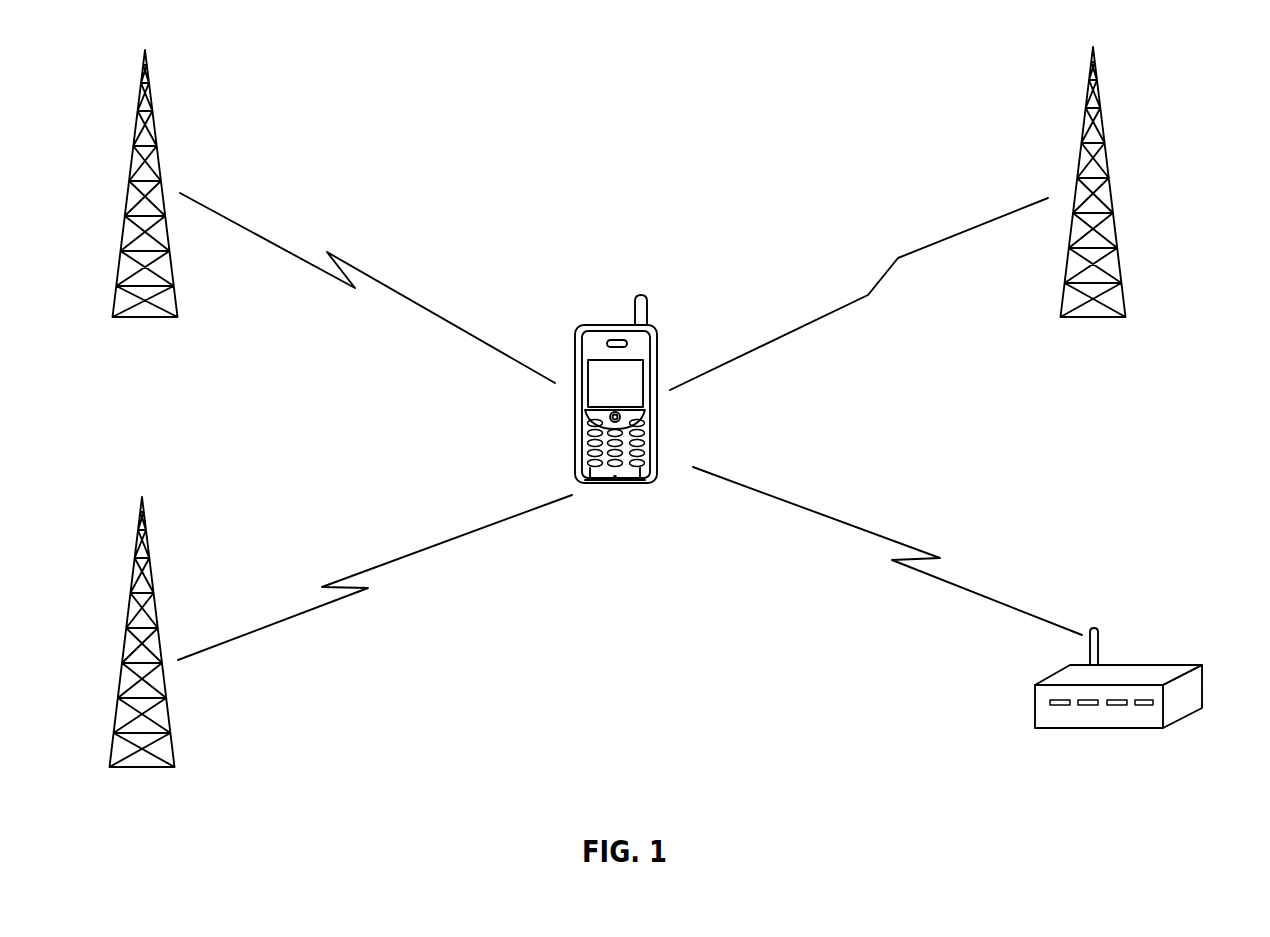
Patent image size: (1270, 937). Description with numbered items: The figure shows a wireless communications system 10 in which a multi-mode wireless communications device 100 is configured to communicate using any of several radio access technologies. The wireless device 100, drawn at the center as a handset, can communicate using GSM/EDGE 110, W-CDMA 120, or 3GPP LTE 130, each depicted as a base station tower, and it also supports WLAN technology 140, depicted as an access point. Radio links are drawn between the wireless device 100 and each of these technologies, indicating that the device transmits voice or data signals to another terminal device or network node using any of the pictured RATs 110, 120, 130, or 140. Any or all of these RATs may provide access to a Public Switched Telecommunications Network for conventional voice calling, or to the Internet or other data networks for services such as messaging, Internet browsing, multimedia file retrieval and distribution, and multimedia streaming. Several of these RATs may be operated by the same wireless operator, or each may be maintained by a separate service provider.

The wireless communications system 10 is at (637, 75).
The multi-mode wireless communications device 100 is at (642, 485).
The GSM/EDGE 110 is at (1105, 140).
The W-CDMA 120 is at (131, 162).
The 3GPP LTE 130 is at (129, 607).
The WLAN technology 140 is at (1178, 717).